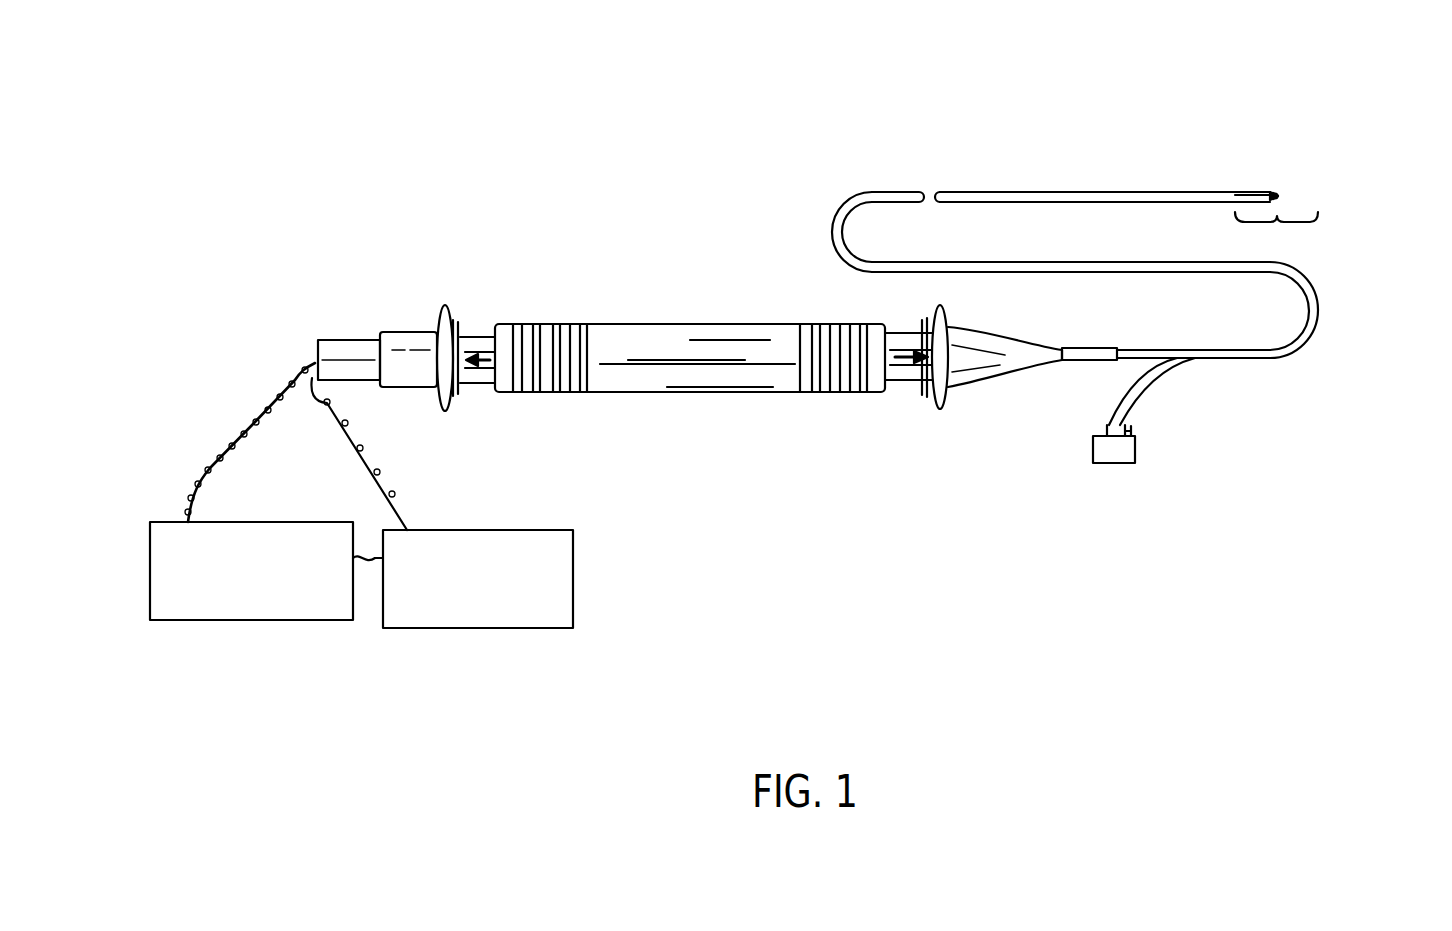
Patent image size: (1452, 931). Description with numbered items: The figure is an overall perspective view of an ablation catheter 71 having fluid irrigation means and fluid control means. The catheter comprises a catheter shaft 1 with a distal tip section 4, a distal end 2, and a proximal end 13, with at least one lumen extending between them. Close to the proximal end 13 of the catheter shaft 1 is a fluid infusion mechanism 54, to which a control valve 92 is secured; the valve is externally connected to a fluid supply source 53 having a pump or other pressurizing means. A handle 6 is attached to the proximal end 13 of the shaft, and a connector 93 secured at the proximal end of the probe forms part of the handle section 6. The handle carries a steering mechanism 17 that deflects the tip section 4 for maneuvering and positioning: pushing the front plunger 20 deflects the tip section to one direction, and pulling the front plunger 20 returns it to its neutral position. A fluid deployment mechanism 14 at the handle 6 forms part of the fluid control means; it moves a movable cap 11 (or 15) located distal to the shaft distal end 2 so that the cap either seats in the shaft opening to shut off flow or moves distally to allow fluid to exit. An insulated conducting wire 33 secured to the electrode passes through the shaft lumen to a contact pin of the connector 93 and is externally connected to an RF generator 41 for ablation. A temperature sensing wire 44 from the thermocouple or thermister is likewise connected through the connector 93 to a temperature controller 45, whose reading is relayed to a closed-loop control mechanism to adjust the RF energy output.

The catheter shaft 1 is at (1060, 187).
The distal end 2 is at (1272, 181).
The distal tip section 4 is at (1276, 225).
The handle 6 is at (552, 325).
The movable cap 11 is at (1363, 152).
The movable cap 15 is at (1287, 195).
The proximal end 13 is at (1058, 368).
The fluid deployment mechanism 14 is at (472, 393).
The steering mechanism 17 is at (893, 400).
The front plunger 20 is at (937, 415).
The insulated conducting wire 33 is at (363, 460).
The RF generator 41 is at (567, 546).
The temperature sensing wire 44 is at (207, 473).
The temperature controller 45 is at (332, 615).
The fluid supply source 53 is at (1143, 450).
The fluid infusion mechanism 54 is at (1148, 393).
The ablation catheter 71 is at (917, 158).
The control valve 92 is at (1143, 425).
The connector 93 is at (350, 330).